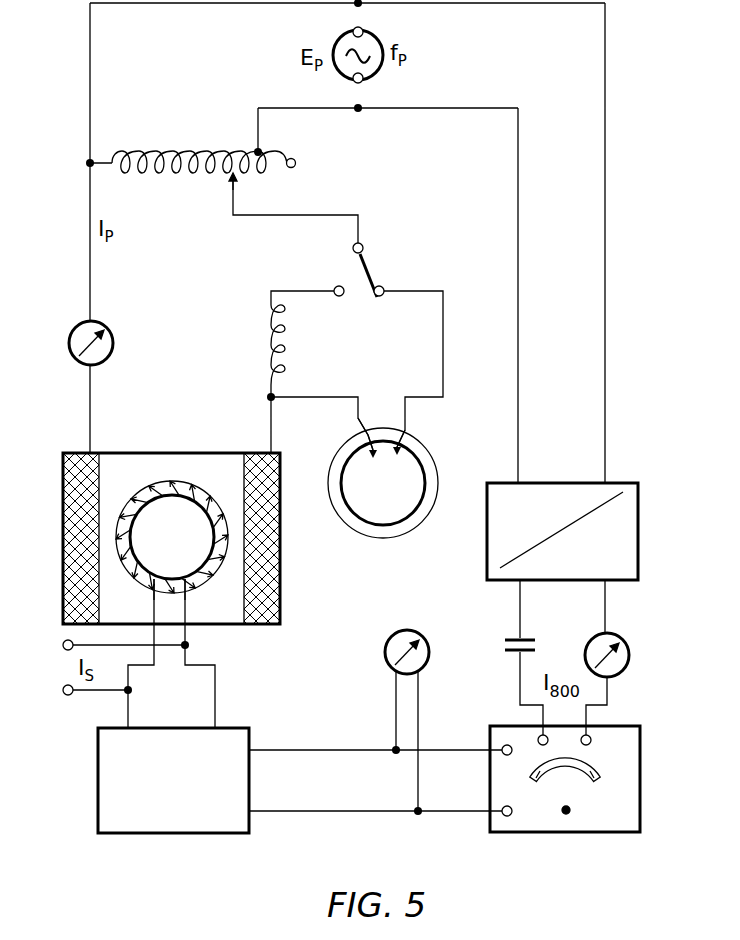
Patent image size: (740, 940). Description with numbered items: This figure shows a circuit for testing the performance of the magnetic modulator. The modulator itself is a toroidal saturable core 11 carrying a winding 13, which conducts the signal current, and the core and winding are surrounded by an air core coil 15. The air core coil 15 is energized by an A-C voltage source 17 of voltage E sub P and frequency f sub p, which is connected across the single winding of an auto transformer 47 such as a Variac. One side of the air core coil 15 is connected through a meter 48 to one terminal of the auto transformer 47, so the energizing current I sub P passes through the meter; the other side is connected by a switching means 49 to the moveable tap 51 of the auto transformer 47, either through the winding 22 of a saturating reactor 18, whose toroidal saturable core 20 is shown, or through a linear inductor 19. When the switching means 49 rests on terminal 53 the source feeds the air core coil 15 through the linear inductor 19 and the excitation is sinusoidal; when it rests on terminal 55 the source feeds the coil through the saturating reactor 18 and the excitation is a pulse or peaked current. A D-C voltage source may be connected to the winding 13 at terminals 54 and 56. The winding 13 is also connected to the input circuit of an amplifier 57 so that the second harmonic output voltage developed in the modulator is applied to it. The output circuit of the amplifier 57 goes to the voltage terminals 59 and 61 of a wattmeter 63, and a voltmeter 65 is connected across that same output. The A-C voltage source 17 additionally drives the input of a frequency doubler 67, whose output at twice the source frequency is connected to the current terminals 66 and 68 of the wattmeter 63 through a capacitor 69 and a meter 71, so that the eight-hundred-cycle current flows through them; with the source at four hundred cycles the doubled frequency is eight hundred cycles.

The toroidal saturable core 11 is at (166, 578).
The winding 13 is at (192, 486).
The air core coil 15 is at (280, 603).
The A-C voltage source 17 is at (381, 44).
The saturating reactor 18 is at (392, 514).
The linear inductor 19 is at (258, 327).
The toroidal saturable core 20 is at (424, 520).
The winding 22 is at (405, 420).
The auto transformer 47 is at (203, 153).
The meter 48 is at (112, 330).
The switching means 49 is at (366, 264).
The moveable tap 51 is at (237, 180).
The terminal 53 is at (329, 307).
The terminal 54 is at (63, 644).
The terminal 55 is at (384, 296).
The terminal 56 is at (63, 693).
The amplifier 57 is at (197, 836).
The voltage terminal 59 is at (502, 745).
The voltage terminal 61 is at (512, 808).
The wattmeter 63 is at (592, 834).
The voltmeter 65 is at (430, 652).
The current terminal 66 is at (548, 741).
The frequency doubler 67 is at (640, 520).
The current terminal 68 is at (591, 740).
The capacitor 69 is at (510, 655).
The meter 71 is at (628, 645).